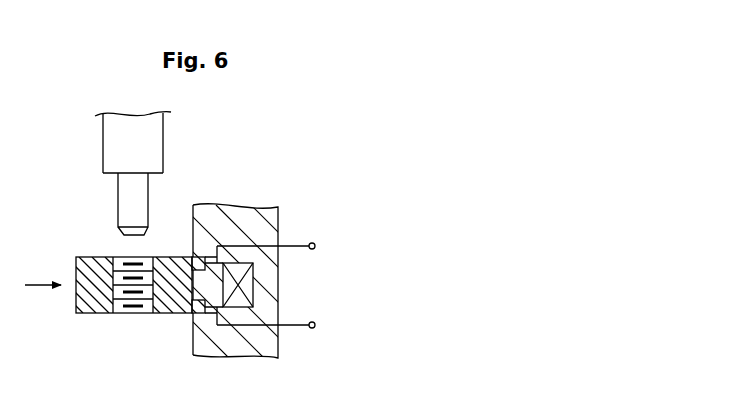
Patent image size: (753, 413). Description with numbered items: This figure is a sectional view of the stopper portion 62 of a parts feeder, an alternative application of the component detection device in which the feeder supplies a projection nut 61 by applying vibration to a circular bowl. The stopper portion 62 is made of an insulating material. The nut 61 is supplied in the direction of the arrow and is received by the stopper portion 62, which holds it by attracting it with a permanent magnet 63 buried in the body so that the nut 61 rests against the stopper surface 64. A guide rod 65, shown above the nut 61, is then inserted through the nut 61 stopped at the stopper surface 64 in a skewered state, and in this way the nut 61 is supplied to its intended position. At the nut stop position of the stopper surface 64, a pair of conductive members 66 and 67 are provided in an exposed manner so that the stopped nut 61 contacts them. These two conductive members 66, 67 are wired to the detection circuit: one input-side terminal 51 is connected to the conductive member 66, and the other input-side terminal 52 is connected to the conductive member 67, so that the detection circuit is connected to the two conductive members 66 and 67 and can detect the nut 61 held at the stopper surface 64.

The projection nut 61 is at (96, 314).
The stopper portion 62 is at (300, 275).
The permanent magnet 63 is at (253, 283).
The stopper surface 64 is at (192, 333).
The guide rod 65 is at (110, 148).
The conductive member 66 is at (190, 312).
The conductive member 67 is at (195, 259).
The input-side terminal 52 is at (329, 246).
The input-side terminal 51 is at (328, 325).